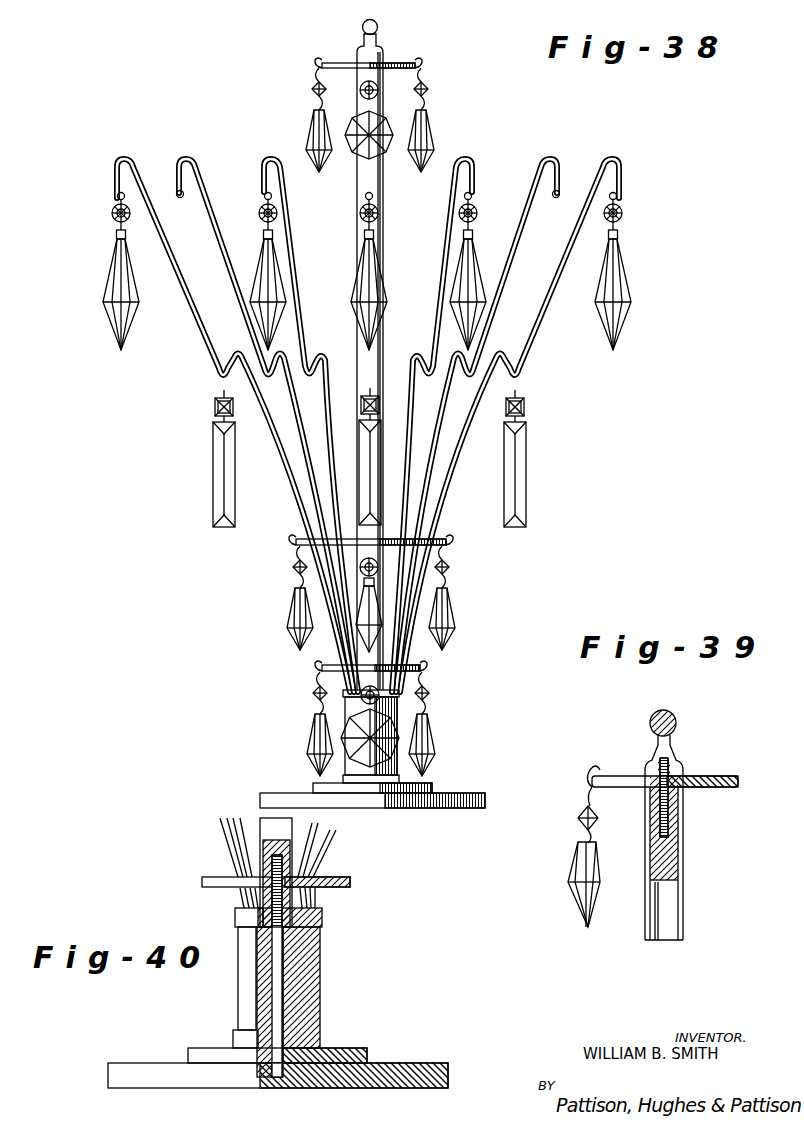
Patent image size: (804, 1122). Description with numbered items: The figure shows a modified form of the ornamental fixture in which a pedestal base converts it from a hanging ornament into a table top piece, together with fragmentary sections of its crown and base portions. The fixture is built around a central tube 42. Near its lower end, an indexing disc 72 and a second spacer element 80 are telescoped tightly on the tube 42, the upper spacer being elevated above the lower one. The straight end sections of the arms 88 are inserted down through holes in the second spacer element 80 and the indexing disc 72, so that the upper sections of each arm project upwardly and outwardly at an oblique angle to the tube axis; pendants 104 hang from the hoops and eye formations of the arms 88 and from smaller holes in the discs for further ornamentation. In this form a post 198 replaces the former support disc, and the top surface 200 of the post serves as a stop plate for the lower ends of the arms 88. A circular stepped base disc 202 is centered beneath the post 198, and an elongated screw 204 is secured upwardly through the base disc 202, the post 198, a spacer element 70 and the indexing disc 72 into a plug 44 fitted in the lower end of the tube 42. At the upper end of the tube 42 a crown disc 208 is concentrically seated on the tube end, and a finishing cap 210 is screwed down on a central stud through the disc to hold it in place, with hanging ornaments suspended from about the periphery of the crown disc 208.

In FIG. 38, the tube 42 is at (385, 238).
In FIG. 39, the tube 42 is at (686, 920).
In FIG. 40, the tube 42 is at (262, 820).
In FIG. 39, the plug 44 is at (688, 835).
In FIG. 40, the plug 44 is at (292, 860).
In FIG. 40, the spacer element 70 is at (312, 900).
In FIG. 38, the indexing disc 72 is at (320, 665).
In FIG. 40, the indexing disc 72 is at (330, 877).
In FIG. 38, the second spacer element 80 is at (300, 536).
In FIG. 38, the arms 88 is at (228, 256).
In FIG. 40, the arms 88 is at (316, 840).
In FIG. 38, the pendants 104 is at (312, 125).
In FIG. 39, the pendants 104 is at (572, 870).
In FIG. 40, the post 198 is at (318, 940).
In FIG. 40, the top surface 200 is at (323, 910).
In FIG. 40, the circular stepped base disc 202 is at (370, 1060).
In FIG. 40, the elongated screw 204 is at (284, 1010).
In FIG. 38, the crown disc 208 is at (408, 64).
In FIG. 38, the finishing cap 210 is at (378, 31).